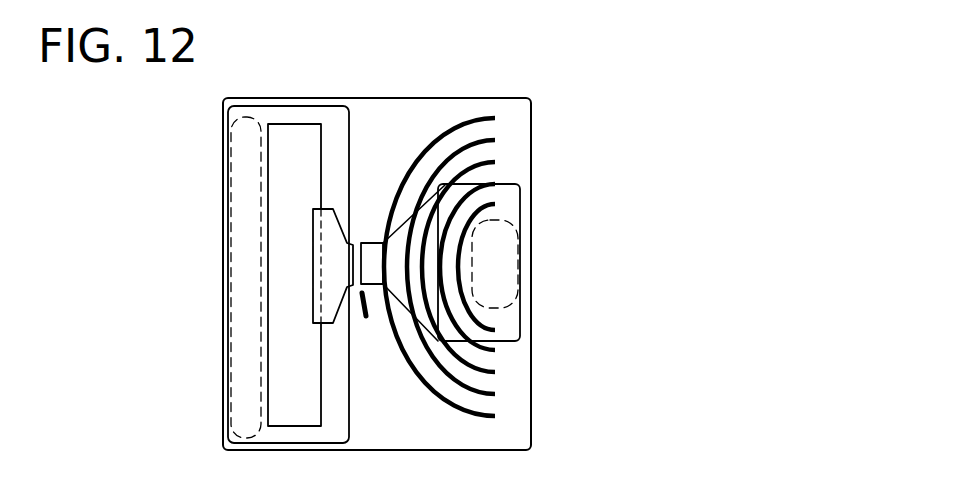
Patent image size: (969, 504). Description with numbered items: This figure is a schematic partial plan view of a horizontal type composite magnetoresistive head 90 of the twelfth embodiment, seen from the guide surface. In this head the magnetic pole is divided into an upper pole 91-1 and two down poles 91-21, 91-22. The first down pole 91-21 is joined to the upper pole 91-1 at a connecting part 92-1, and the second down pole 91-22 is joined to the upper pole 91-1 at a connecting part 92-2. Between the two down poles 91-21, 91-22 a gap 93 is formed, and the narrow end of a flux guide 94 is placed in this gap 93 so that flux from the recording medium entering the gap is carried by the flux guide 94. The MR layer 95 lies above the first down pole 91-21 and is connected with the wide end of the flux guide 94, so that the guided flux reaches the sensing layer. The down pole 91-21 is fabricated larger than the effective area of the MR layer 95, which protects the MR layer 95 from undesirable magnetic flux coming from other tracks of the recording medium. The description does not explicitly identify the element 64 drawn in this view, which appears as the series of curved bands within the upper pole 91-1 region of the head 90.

The H-type MR head 90 is at (636, 100).
The down pole 91-21 is at (305, 113).
The connecting part 92-1 is at (240, 200).
The MR layer 95 is at (282, 268).
The gap 93 is at (366, 316).
The flux guide 94 is at (338, 323).
The upper pole 91-1 is at (455, 110).
The light beam 64 is at (481, 122).
The down pole 91-22 is at (507, 211).
The connecting part 92-2 is at (505, 250).